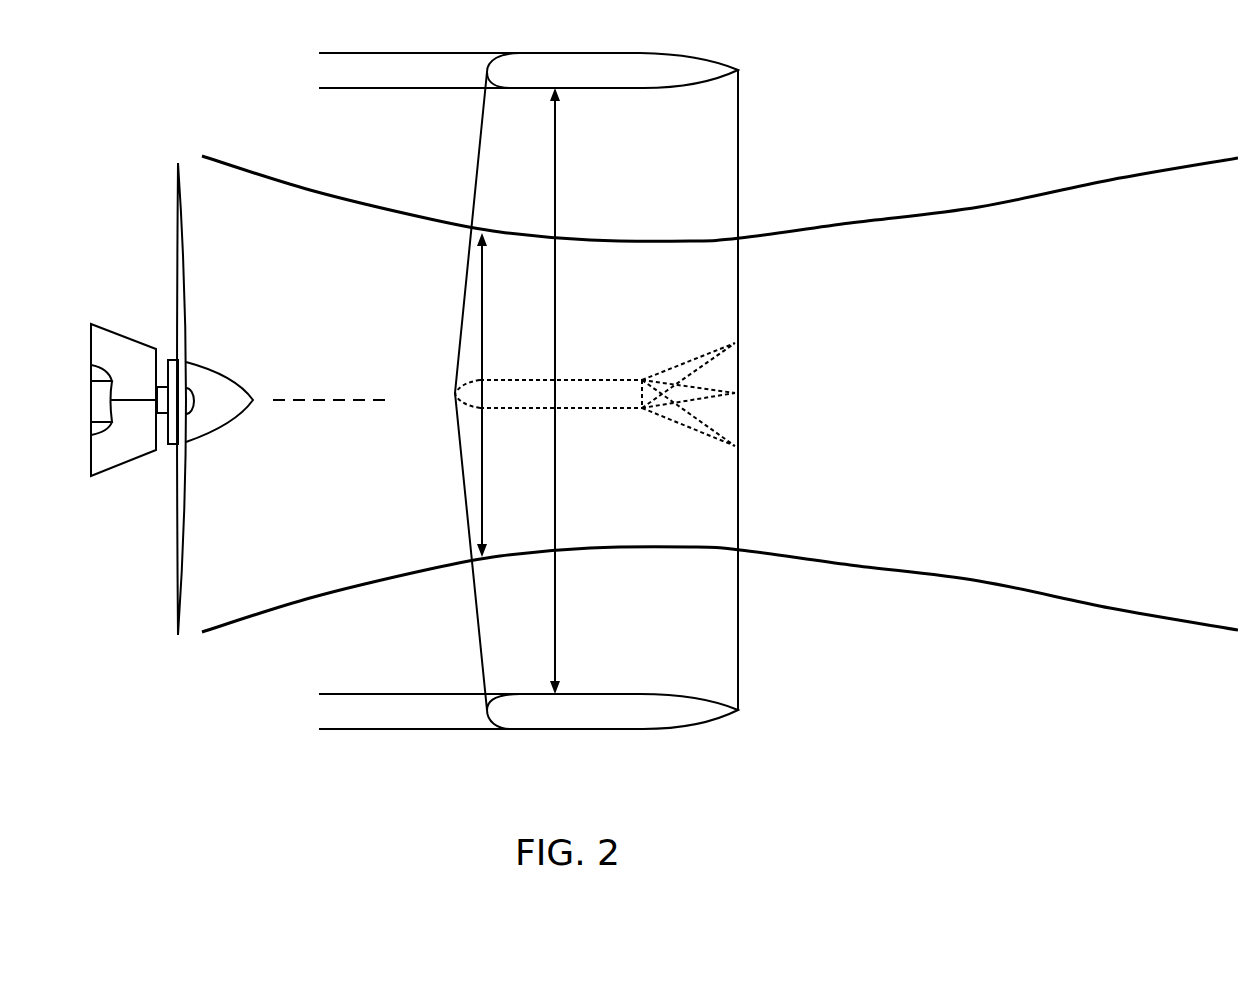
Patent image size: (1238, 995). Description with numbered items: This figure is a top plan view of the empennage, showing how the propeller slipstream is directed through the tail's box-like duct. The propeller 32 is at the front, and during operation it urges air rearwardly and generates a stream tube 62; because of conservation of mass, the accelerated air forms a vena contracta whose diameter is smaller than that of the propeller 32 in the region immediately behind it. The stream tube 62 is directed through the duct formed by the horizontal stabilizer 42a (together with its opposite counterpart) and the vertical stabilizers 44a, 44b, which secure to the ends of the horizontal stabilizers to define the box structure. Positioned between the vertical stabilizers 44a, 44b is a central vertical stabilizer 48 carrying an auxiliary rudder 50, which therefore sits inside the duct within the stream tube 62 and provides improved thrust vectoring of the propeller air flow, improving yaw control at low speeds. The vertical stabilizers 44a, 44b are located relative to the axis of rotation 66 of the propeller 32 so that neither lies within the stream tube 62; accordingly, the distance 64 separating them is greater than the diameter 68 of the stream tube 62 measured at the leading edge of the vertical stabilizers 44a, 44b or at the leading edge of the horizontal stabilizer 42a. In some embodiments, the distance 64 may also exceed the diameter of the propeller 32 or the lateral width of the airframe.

The propeller 32 is at (185, 272).
The stream tube 62 is at (310, 190).
The distance 64 is at (557, 150).
The axis of rotation 66 is at (308, 400).
The diameter 68 is at (480, 438).
The horizontal stabilizer 42a is at (715, 190).
The vertical stabilizer 44a is at (627, 718).
The vertical stabilizer 44b is at (638, 70).
The vertical stabilizer 48 is at (595, 408).
The auxiliary rudder 50 is at (735, 410).